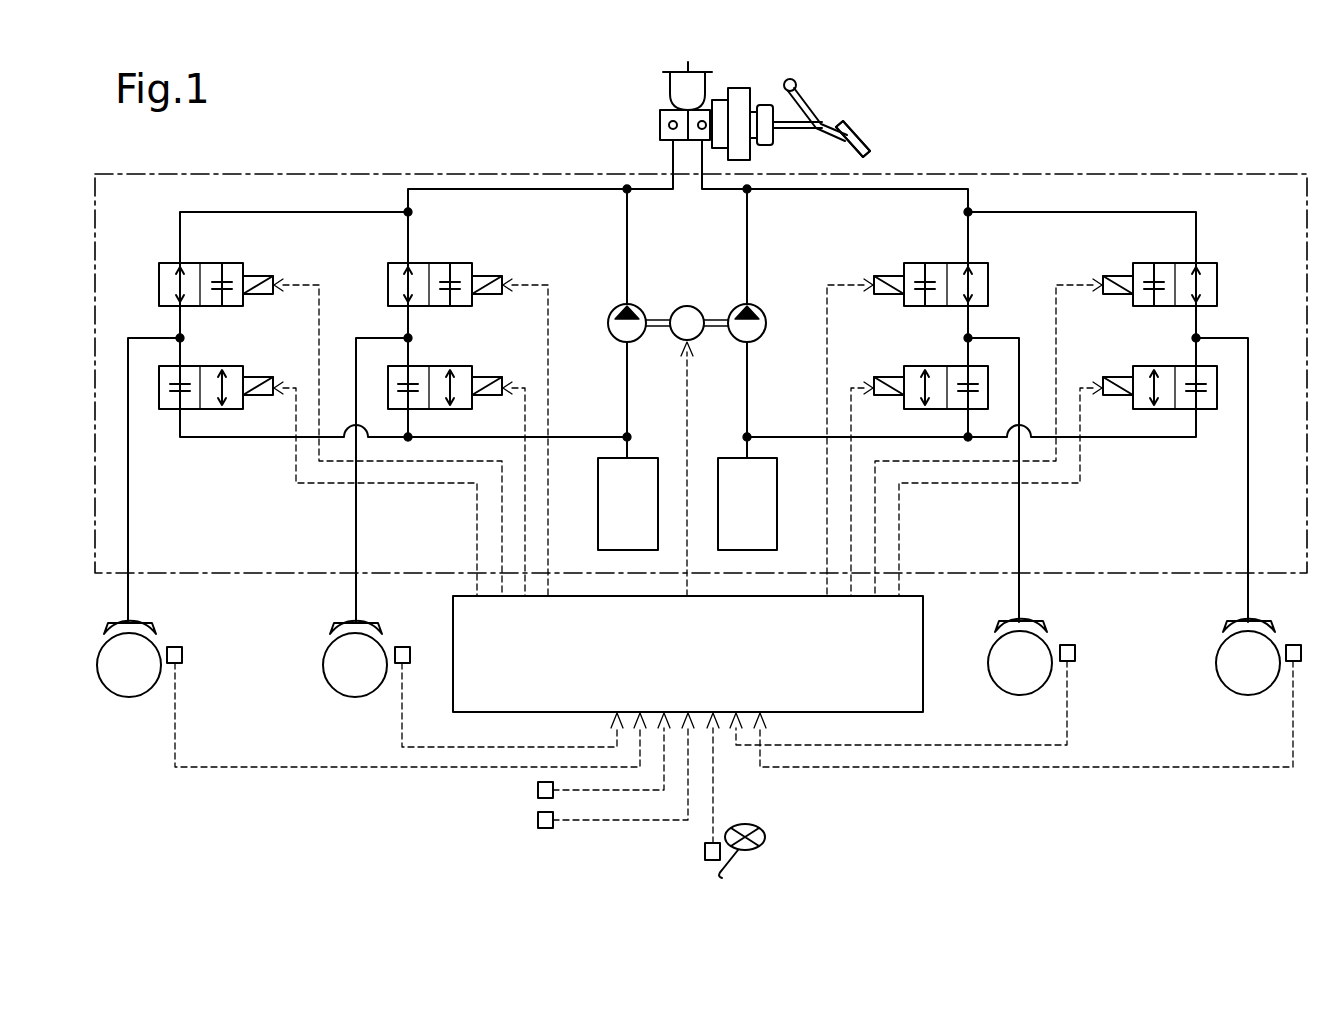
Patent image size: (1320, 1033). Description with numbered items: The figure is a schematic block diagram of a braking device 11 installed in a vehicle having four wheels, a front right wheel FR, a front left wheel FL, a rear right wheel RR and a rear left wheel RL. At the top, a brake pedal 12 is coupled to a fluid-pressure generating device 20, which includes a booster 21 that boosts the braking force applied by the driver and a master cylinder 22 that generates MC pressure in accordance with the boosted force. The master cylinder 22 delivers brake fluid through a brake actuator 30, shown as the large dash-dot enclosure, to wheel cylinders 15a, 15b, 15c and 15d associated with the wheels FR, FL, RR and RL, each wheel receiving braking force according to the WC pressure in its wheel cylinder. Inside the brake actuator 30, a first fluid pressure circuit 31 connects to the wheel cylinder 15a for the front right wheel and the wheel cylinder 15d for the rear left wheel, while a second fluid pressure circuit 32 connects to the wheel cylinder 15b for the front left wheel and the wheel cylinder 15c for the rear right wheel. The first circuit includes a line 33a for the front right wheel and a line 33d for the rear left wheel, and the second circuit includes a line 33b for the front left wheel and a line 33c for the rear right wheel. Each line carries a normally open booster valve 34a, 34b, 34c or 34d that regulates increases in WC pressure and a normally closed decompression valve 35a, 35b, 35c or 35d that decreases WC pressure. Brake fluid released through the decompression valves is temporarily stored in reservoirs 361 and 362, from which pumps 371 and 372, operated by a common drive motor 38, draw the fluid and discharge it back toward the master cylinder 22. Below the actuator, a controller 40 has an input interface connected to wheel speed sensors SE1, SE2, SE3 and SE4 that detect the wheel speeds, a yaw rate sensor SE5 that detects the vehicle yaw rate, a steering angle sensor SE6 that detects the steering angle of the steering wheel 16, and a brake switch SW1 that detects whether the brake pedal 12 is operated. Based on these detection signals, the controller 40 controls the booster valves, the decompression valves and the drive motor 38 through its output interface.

The braking device 11 is at (1096, 84).
The brake pedal 12 is at (860, 136).
The wheel cylinder 15a is at (346, 622).
The wheel cylinder 15b is at (1034, 622).
The wheel cylinder 15c is at (1236, 622).
The wheel cylinder 15d is at (144, 622).
The steering wheel 16 is at (768, 838).
The fluid-pressure generating device 20 is at (759, 101).
The booster 21 is at (737, 95).
The master cylinder 22 is at (662, 108).
The brake actuator 30 is at (1174, 173).
The first fluid pressure circuit 31 is at (650, 192).
The second fluid pressure circuit 32 is at (724, 192).
The line for the front right wheel 33a is at (412, 226).
The line for the front left wheel 33b is at (972, 228).
The line for the rear right wheel 33c is at (1078, 210).
The line for the rear left wheel 33d is at (296, 212).
The booster valve 34a is at (460, 262).
The booster valve 34b is at (932, 262).
The booster valve 34c is at (1165, 262).
The booster valve 34d is at (208, 262).
The decompression valve 35a is at (463, 365).
The decompression valve 35b is at (940, 365).
The decompression valve 35c is at (1165, 365).
The decompression valve 35d is at (232, 365).
The reservoir 361 is at (660, 440).
The reservoir 362 is at (728, 455).
The pump 371 is at (658, 295).
The pump 372 is at (733, 308).
The drive motor 38 is at (680, 342).
The controller 40 is at (923, 700).
The wheel speed sensor SE1 is at (403, 645).
The wheel speed sensor SE2 is at (1078, 653).
The wheel speed sensor SE3 is at (1294, 645).
The wheel speed sensor SE4 is at (185, 655).
The yaw rate sensor SE5 is at (537, 790).
The steering angle sensor SE6 is at (703, 851).
The brake switch SW1 is at (537, 820).